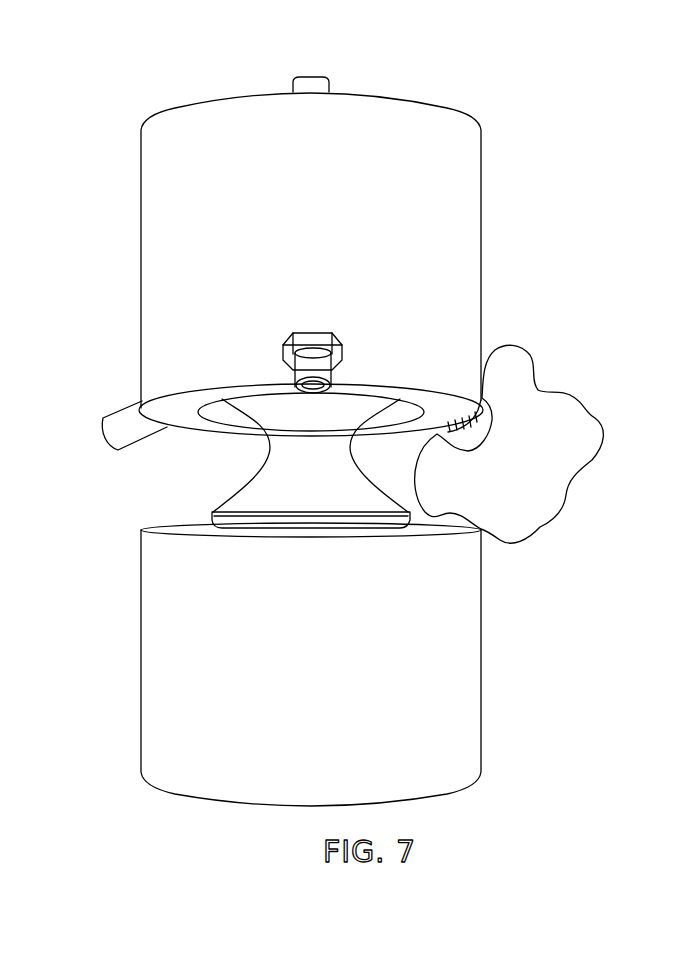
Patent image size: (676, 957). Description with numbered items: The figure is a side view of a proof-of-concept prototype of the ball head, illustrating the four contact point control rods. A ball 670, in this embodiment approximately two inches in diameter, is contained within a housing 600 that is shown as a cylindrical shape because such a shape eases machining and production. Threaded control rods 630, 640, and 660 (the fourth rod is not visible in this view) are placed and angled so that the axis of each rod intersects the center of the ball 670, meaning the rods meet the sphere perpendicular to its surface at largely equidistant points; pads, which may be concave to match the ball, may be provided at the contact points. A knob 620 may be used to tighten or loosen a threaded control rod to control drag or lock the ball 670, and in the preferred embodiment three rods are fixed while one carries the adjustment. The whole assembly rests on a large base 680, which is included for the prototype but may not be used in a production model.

The housing 600 is at (277, 228).
The knob 620 is at (543, 507).
The threaded control rod 630 is at (312, 80).
The threaded control rod 640 is at (323, 387).
The threaded control rod 660 is at (122, 423).
The ball 670 is at (253, 466).
The base 680 is at (172, 652).